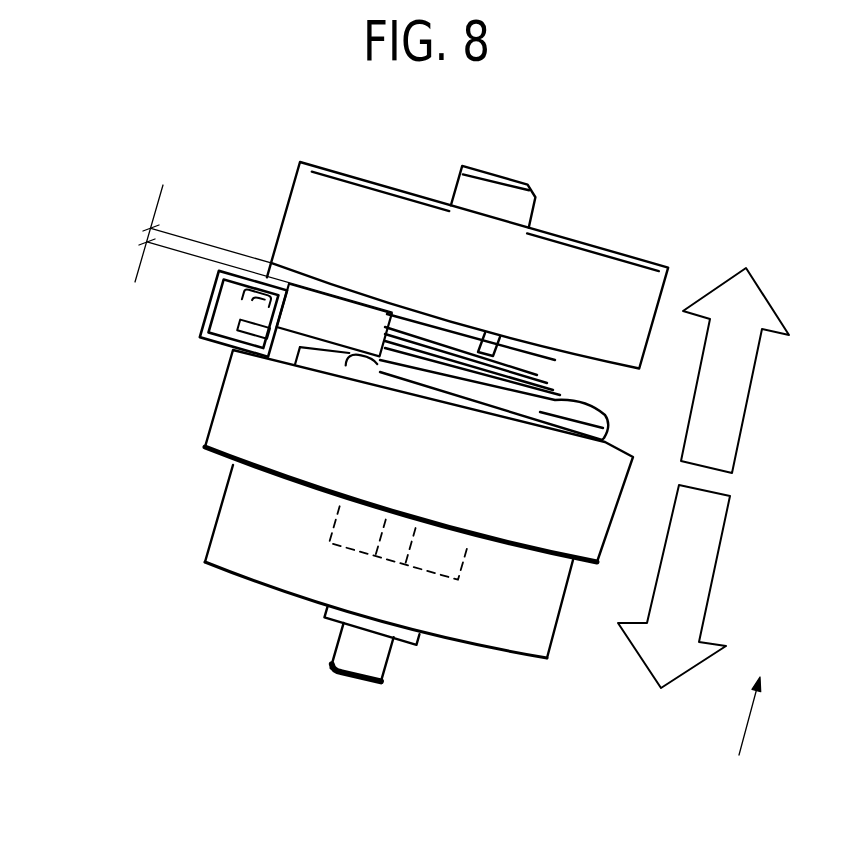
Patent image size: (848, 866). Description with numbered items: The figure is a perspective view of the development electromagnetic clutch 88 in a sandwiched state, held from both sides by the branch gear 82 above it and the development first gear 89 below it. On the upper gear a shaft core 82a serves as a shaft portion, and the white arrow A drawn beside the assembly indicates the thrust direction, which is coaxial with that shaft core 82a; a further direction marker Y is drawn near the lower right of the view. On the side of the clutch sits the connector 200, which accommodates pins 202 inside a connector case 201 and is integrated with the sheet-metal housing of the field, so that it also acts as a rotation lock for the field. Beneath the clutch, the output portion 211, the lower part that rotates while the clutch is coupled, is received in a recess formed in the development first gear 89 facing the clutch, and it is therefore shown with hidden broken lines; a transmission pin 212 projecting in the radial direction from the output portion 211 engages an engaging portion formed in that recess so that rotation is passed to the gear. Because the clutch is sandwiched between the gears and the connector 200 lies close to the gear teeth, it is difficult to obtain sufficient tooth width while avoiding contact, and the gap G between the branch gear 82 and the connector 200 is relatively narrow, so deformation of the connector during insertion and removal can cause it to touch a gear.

The branch gear 82 is at (294, 192).
The shaft core 82a is at (500, 175).
The development electromagnetic clutch 88 is at (211, 424).
The development first gear 89 is at (211, 541).
The connector 200 is at (82, 297).
The connector case 201 is at (243, 298).
The pins 202 is at (233, 316).
The output portion 211 is at (463, 560).
The transmission pin 212 is at (403, 541).
The gap G is at (263, 247).
The white arrow A is at (740, 441).
The Y axis Y is at (756, 700).